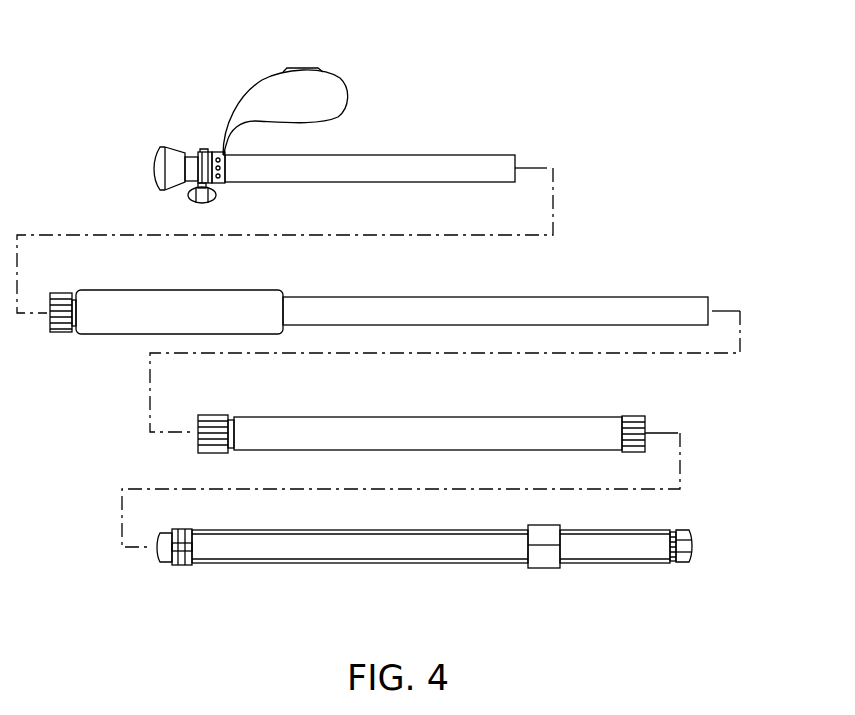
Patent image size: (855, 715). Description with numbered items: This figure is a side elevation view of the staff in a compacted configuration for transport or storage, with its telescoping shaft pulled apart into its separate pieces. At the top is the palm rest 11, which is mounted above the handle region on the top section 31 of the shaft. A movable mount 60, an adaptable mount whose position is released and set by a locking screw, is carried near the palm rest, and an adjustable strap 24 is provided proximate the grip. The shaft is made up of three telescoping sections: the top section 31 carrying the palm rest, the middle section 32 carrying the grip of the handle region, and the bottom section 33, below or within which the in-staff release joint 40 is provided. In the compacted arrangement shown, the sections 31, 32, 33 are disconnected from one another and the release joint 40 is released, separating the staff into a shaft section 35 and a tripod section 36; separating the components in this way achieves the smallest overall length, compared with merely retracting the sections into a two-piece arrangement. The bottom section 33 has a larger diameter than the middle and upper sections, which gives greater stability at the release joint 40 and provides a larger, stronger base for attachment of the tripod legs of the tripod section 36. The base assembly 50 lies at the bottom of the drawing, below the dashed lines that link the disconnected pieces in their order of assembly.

The palm rest 11 is at (156, 153).
The movable mount 60 is at (193, 130).
The adjustable strap 24 is at (331, 77).
The top section 31 is at (389, 142).
The middle section 32 is at (574, 282).
The bottom section 33 is at (446, 408).
The release joint 40 is at (634, 408).
The shaft section 35 is at (742, 405).
The base section 50 is at (415, 578).
The tripod section 36 is at (626, 584).